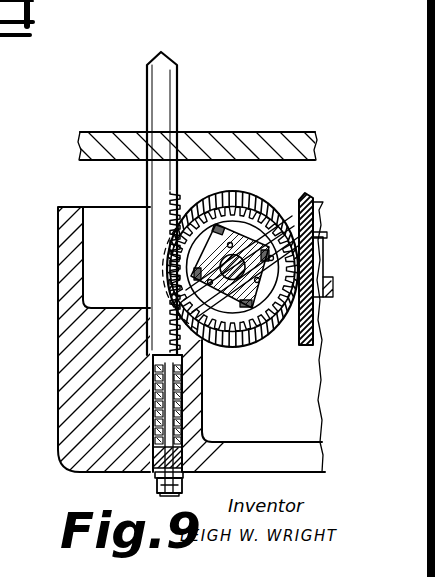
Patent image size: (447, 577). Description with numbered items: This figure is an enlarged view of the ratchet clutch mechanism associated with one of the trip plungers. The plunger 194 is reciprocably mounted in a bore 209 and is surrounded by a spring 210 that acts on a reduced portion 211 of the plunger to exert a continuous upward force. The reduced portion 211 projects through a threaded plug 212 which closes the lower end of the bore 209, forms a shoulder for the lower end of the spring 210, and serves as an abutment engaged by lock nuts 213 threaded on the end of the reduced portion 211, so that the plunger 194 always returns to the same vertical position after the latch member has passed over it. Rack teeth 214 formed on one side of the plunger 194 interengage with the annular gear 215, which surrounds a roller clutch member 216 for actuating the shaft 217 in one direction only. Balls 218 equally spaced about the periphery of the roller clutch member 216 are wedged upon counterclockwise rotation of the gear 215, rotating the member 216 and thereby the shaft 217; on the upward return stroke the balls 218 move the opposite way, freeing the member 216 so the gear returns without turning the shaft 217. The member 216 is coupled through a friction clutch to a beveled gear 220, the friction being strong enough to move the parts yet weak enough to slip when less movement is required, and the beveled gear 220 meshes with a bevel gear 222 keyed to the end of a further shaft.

The plunger 194 is at (160, 107).
The bore 209 is at (150, 356).
The spring 210 is at (175, 410).
The reduced portion 211 is at (170, 437).
The threaded plug 212 is at (189, 462).
The lock nuts 213 is at (155, 480).
The rack teeth 214 is at (172, 195).
The annular gear 215 is at (225, 345).
The roller clutch member 216 is at (256, 198).
The shaft 217 is at (257, 346).
The balls 218 is at (228, 193).
The beveled gear 220 is at (238, 362).
The bevel gear 222 is at (307, 347).